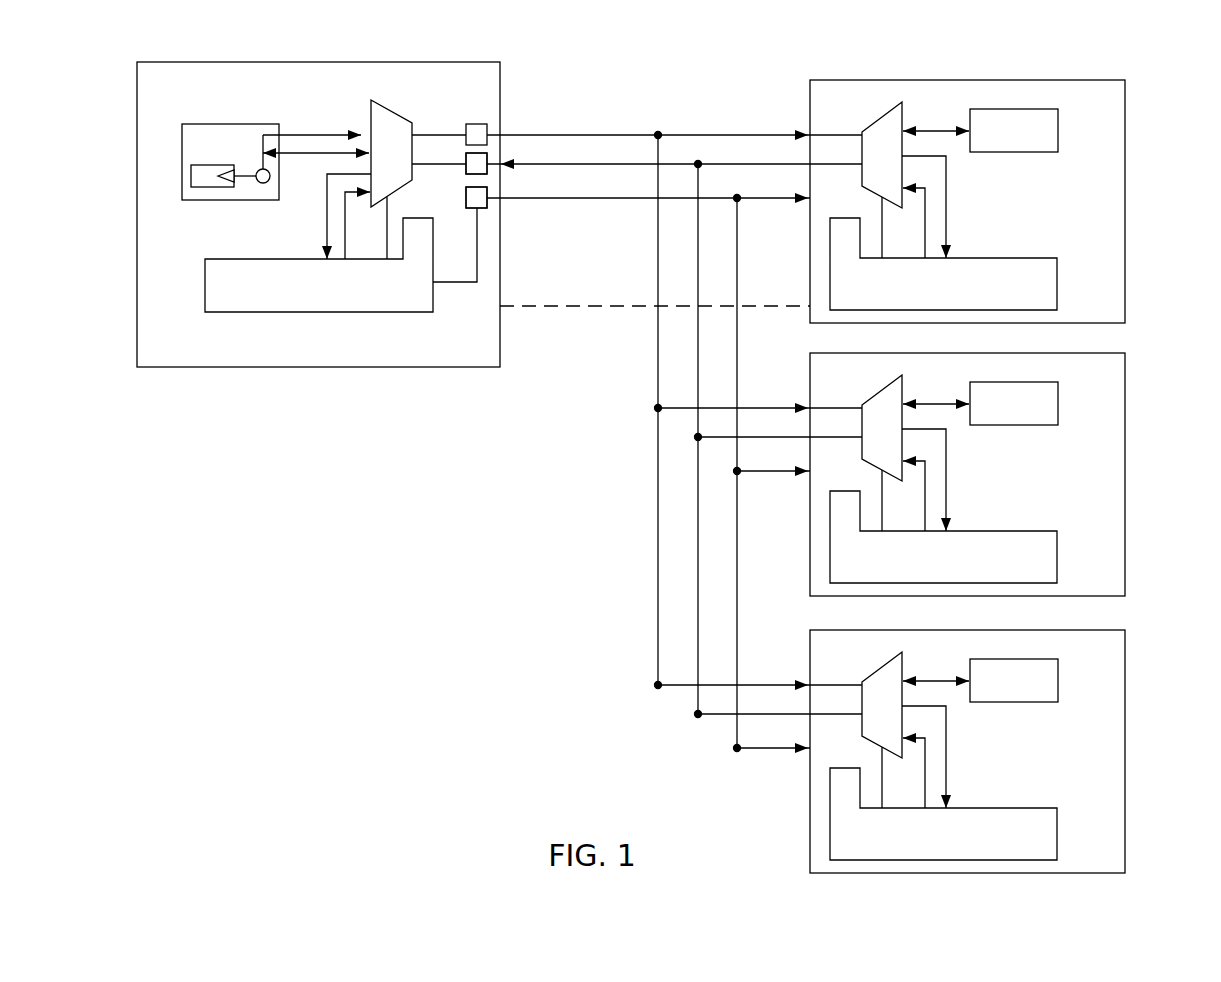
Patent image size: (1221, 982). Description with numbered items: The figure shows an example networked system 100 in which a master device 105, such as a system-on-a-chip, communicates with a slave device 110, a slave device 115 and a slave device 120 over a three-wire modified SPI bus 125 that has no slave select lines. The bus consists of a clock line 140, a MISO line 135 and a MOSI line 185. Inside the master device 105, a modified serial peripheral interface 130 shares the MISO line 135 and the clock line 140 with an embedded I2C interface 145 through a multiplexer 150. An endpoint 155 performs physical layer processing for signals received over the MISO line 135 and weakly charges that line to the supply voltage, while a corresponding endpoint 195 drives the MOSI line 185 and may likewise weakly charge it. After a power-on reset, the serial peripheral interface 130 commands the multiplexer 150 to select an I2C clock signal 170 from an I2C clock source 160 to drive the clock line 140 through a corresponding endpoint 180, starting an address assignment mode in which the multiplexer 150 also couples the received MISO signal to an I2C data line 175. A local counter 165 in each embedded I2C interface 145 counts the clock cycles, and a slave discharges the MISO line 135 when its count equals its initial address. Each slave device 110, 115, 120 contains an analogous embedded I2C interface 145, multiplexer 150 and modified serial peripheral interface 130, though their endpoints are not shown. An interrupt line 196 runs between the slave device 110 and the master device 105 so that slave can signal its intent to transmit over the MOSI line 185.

The networked system 100 is at (520, 533).
The master device 105 is at (397, 367).
The slave device 110 is at (1125, 203).
The slave device 115 is at (1125, 476).
The slave device 120 is at (1125, 753).
The modified SPI bus 125 is at (560, 93).
The modified serial peripheral interface 130 is at (316, 312).
The MISO line 135 is at (623, 164).
The clock line 140 is at (622, 135).
The embedded I2C interface 145 is at (232, 124).
The multiplexer 150 is at (398, 115).
The endpoint 155 is at (464, 175).
The I2C clock source 160 is at (263, 184).
The local counter 165 is at (212, 188).
The I2C clock signal 170 is at (318, 135).
The I2C data line 175 is at (297, 158).
The endpoint 180 is at (475, 124).
The MOSI line 185 is at (560, 198).
The endpoint 195 is at (484, 208).
The interrupt line 196 is at (582, 306).